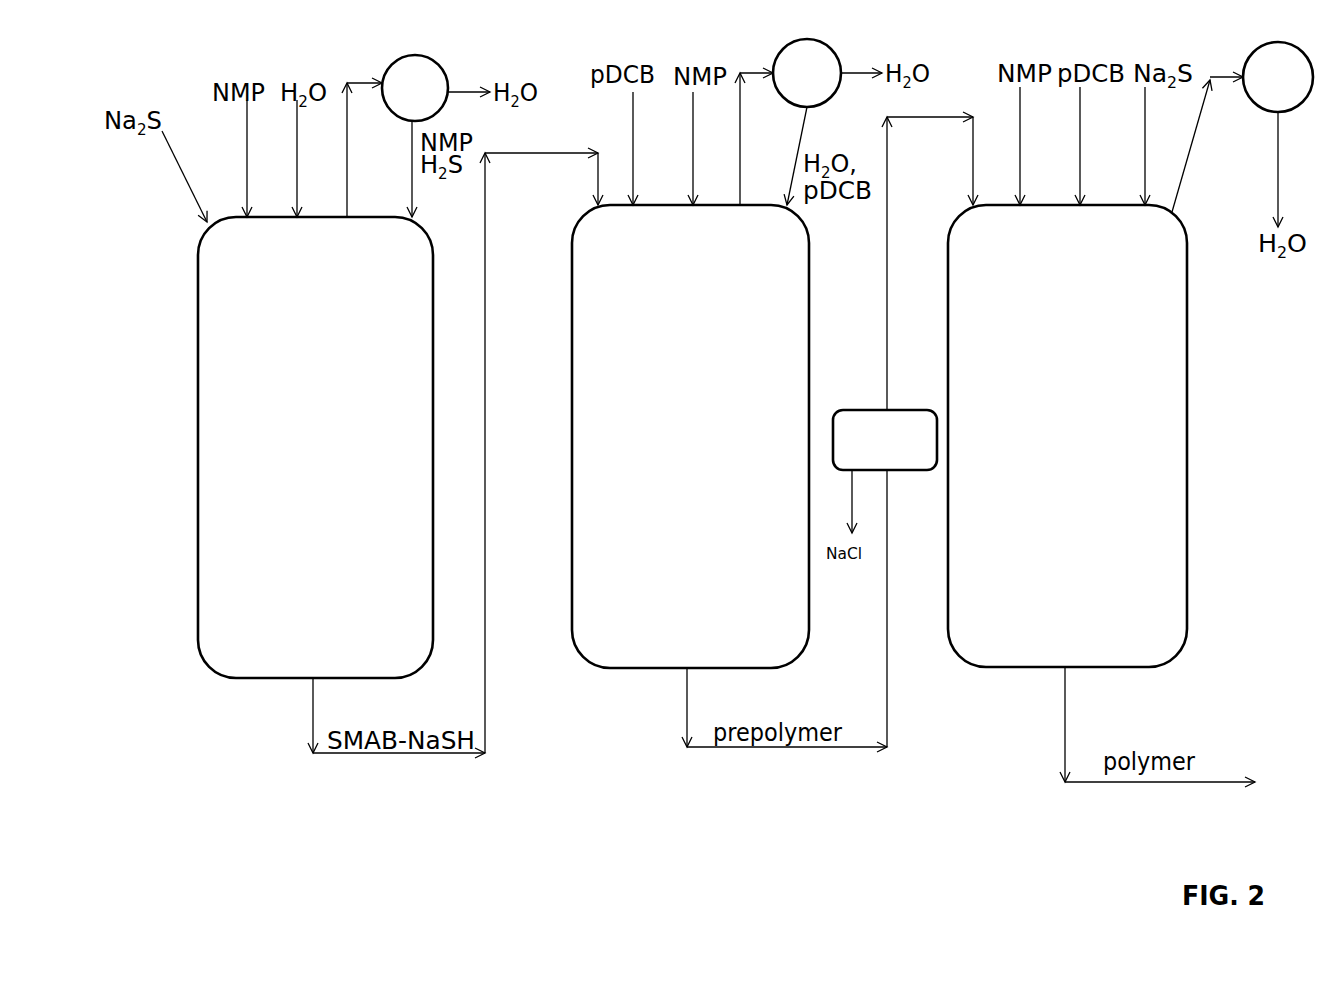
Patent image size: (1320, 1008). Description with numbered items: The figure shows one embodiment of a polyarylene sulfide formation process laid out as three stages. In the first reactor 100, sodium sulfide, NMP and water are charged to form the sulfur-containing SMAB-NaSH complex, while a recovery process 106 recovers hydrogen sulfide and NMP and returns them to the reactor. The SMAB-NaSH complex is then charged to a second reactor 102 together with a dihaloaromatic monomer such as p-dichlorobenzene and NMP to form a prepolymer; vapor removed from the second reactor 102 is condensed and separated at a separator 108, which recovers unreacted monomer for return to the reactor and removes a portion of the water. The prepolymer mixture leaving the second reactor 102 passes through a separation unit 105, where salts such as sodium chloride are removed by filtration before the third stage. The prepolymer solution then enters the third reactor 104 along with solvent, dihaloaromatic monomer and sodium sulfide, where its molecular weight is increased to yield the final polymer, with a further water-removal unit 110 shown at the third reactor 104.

The first reactor 100 is at (315, 447).
The second reactor 102 is at (690, 436).
The third reactor 104 is at (1067, 436).
The separation unit 105 is at (885, 440).
The recovery process 106 is at (415, 88).
The separator 108 is at (807, 73).
The dehydration unit (third) 110 is at (1278, 77).